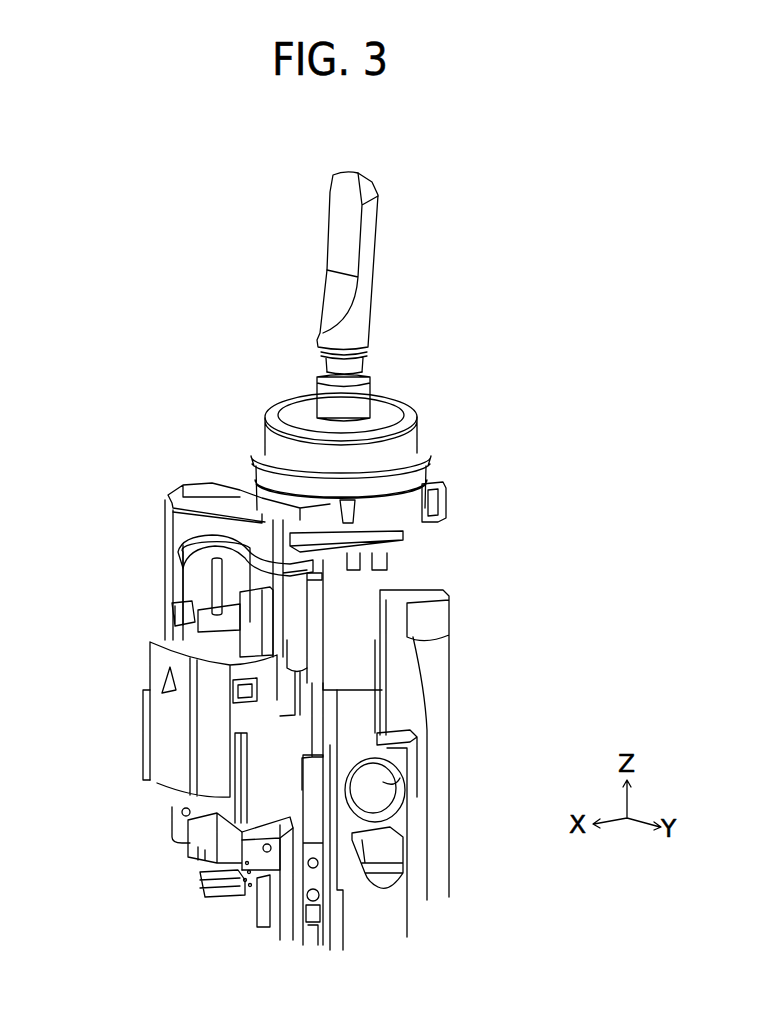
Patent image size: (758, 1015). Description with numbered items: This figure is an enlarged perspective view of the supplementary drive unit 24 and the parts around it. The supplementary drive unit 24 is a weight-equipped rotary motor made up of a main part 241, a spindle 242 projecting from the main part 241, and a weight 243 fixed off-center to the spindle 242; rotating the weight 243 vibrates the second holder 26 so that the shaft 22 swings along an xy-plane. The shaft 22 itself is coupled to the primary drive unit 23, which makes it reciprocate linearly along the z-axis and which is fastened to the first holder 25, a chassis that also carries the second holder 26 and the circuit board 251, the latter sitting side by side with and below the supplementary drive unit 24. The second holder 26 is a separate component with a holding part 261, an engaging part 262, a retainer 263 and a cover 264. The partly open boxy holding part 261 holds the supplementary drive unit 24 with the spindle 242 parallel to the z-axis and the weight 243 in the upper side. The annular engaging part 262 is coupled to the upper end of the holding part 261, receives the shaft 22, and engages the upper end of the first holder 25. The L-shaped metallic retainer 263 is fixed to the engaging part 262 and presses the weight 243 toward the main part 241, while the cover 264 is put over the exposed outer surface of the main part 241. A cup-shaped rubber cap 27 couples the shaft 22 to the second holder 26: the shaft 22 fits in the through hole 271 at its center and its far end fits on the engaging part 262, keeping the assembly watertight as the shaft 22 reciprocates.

The shaft 22 is at (370, 260).
The primary drive unit 23 is at (440, 688).
The supplementary drive unit 24 is at (139, 597).
The first holder 25 is at (395, 817).
The second holder 26 is at (282, 675).
The cap 27 is at (388, 400).
The main part 241 is at (183, 629).
The spindle 242 is at (217, 593).
The weight 243 is at (192, 577).
The circuit board 251 is at (185, 875).
The holding part 261 is at (178, 537).
The engaging part 262 is at (435, 502).
The retainer 263 is at (263, 563).
The cover 264 is at (172, 782).
The through hole 271 is at (360, 412).